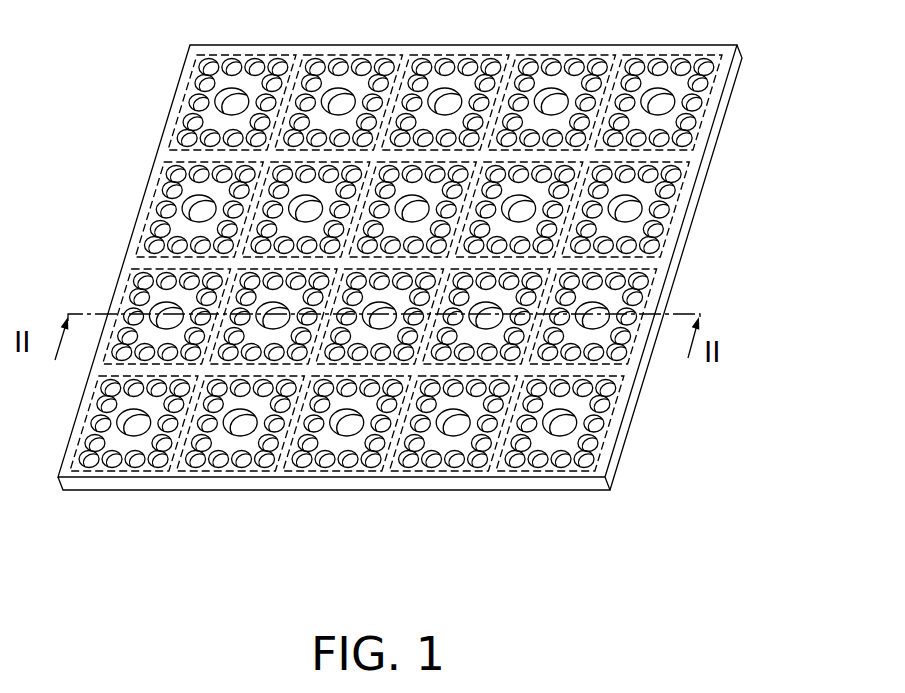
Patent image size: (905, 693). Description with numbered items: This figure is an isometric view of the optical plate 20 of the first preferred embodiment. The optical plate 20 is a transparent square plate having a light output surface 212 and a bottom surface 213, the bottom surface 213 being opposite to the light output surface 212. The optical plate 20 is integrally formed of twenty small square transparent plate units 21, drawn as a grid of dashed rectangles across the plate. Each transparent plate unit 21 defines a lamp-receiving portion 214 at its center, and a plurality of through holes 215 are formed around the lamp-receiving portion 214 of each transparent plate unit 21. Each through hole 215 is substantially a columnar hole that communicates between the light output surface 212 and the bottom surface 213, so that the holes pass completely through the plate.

The optical plate 20 is at (163, 44).
The transparent plate unit 21 is at (783, 152).
The light output surface 212 is at (681, 172).
The bottom surface 213 is at (680, 293).
The lamp-receiving portion 214 is at (628, 208).
The through hole 215 is at (650, 246).